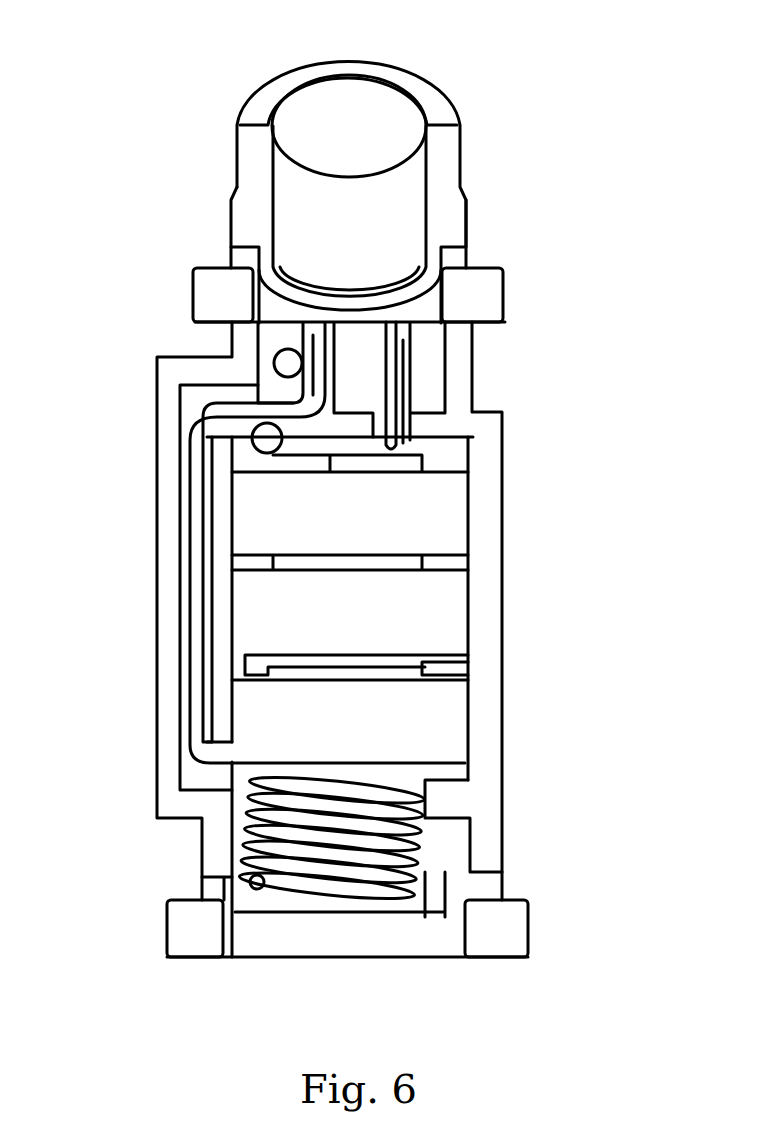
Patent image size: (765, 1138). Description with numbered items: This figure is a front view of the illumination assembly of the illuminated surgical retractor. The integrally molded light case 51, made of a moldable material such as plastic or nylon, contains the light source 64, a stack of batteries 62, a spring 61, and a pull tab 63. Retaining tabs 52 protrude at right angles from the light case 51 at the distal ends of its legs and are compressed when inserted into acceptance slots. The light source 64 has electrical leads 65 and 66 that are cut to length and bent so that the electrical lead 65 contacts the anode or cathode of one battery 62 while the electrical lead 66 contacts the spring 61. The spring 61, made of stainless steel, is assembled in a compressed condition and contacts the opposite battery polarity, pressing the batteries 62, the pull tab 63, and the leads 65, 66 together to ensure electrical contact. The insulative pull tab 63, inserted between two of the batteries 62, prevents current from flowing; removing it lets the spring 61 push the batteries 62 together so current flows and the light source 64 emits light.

The light case 51 is at (165, 690).
The retaining tabs 52 is at (193, 300).
The spring 61 is at (240, 845).
The batteries 62 is at (448, 520).
The pull tab 63 is at (430, 655).
The light source 64 is at (360, 108).
The electrical lead 65 is at (413, 378).
The electrical lead 66 is at (225, 400).